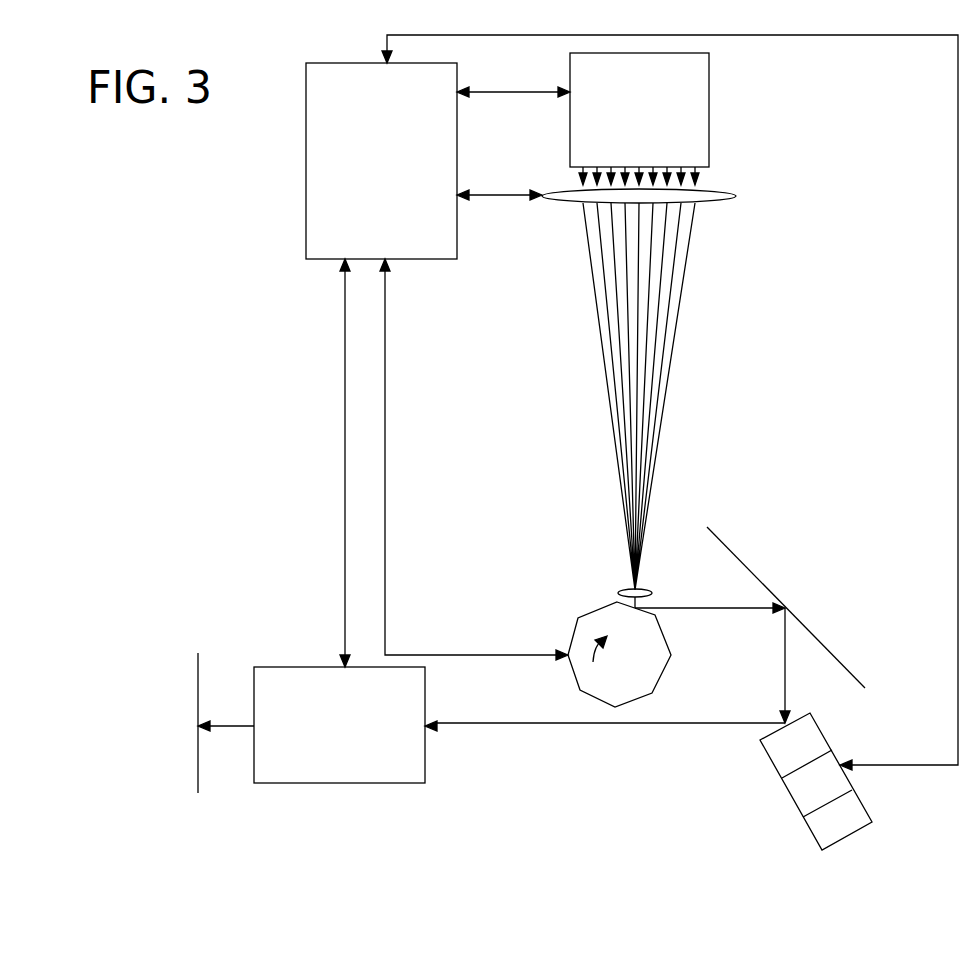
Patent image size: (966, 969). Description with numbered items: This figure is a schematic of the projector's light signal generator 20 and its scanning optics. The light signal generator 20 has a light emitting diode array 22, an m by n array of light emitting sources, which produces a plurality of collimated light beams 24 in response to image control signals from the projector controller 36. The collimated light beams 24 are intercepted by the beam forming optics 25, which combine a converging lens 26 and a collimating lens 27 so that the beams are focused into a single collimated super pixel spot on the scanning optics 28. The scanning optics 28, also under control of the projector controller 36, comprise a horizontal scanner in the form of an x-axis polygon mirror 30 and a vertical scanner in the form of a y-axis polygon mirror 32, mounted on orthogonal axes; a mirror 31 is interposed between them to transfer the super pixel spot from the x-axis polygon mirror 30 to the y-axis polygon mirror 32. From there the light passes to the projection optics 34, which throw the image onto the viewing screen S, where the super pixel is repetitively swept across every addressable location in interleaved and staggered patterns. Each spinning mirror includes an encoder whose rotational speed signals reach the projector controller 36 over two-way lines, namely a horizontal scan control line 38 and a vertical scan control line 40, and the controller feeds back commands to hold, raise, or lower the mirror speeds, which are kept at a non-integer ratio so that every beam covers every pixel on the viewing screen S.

The light signal generator 20 is at (792, 92).
The light emitting diode array 22 is at (709, 98).
The collimated light beams 24 is at (722, 177).
The beam forming optics 25 is at (553, 172).
The converging lens 26 is at (707, 203).
The collimating lens 27 is at (652, 593).
The scanning optics 28 is at (620, 612).
The x-axis polygon mirror 30 is at (671, 655).
The mirror 31 is at (807, 628).
The y-axis polygon mirror 32 is at (828, 742).
The projection optics 34 is at (425, 745).
The projector controller 36 is at (306, 78).
The horizontal scan control line 38 is at (385, 398).
The vertical scan control line 40 is at (958, 442).
The viewing screen S is at (198, 663).